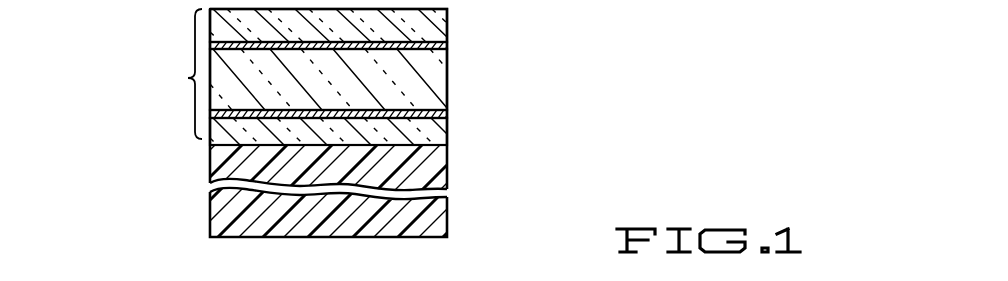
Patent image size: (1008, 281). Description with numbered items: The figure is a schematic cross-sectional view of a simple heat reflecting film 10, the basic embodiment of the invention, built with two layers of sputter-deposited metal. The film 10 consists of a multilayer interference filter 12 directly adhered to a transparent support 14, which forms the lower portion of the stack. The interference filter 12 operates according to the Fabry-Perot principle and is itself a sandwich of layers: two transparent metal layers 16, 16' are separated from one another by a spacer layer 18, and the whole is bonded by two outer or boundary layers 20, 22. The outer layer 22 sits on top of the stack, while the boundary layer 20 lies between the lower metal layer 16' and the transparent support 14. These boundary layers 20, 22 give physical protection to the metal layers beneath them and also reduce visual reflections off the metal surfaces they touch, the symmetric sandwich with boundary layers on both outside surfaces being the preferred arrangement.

The film 10 is at (199, 151).
The multilayer interference filter 12 is at (120, 74).
The transparent support 14 is at (448, 190).
The transparent metal layer 16 is at (569, 58).
The transparent metal layer 16' is at (572, 115).
The spacer layer 18 is at (443, 83).
The boundary layer 20 is at (447, 138).
The outer layer 22 is at (447, 30).